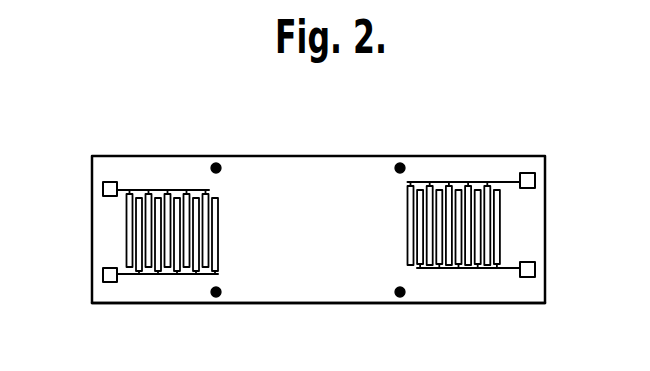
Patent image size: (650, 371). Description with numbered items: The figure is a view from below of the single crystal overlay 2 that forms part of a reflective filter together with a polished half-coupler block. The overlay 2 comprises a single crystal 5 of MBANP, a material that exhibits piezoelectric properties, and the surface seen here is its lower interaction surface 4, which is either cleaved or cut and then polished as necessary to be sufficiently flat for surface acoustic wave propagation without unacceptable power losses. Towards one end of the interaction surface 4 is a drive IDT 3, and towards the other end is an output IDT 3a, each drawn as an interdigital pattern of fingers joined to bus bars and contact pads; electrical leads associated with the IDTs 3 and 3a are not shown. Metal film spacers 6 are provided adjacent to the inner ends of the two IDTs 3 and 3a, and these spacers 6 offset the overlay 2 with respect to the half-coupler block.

The single crystal overlay 2 is at (510, 126).
The drive IDT 3 is at (127, 237).
The output IDT 3a is at (497, 240).
The interaction surface 4 is at (316, 223).
The single crystal 5 is at (298, 292).
The metal film spacers 6 is at (217, 167).